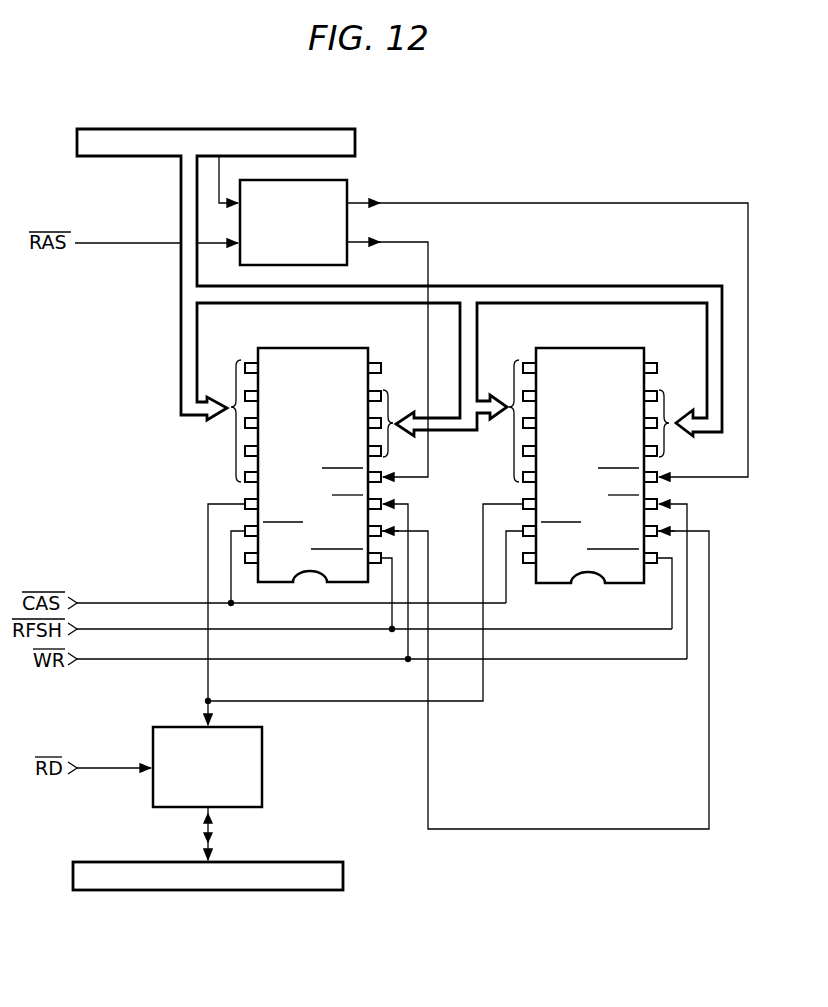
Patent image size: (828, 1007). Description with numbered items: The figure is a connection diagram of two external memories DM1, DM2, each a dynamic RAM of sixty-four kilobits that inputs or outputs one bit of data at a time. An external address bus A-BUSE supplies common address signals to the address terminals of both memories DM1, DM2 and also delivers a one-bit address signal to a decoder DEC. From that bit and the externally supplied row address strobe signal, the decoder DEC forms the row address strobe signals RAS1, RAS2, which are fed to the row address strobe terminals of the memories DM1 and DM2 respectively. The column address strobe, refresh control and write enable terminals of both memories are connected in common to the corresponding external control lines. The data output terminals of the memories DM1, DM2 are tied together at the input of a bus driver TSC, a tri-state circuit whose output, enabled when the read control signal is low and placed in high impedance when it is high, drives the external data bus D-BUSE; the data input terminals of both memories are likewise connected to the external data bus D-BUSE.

The external address bus A-BUSE is at (277, 128).
The decoder DEC is at (348, 186).
The row address strobe signal RAS1 is at (505, 239).
The row address strobe signal RAS2 is at (685, 164).
The external memory DM1 is at (340, 348).
The external memory DM2 is at (617, 348).
The bus driver TSC is at (263, 738).
The external data bus D-BUSE is at (276, 898).